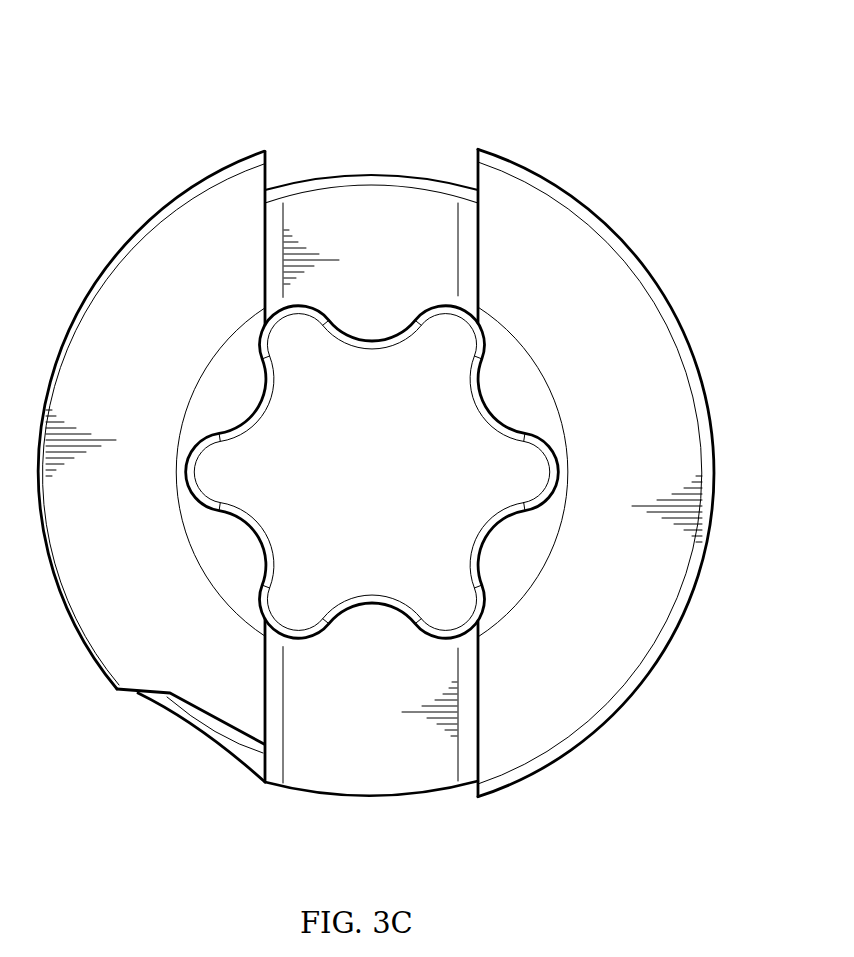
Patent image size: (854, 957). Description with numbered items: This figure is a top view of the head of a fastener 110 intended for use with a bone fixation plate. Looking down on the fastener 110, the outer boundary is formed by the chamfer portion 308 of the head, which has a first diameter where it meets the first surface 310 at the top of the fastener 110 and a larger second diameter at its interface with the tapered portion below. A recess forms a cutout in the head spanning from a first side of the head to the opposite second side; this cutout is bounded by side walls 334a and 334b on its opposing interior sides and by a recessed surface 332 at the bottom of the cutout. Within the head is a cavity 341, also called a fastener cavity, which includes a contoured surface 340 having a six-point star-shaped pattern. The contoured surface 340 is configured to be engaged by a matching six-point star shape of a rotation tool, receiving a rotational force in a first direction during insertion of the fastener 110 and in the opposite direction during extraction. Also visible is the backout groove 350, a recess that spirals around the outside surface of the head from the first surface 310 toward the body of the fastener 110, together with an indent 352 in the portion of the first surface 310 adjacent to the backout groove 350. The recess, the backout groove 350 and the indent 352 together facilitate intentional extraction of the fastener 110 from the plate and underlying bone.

The fastener 110 is at (186, 62).
The chamfer portion 308 is at (542, 180).
The first surface 310 is at (595, 273).
The recessed surface 332 is at (382, 205).
The side wall 334a is at (267, 177).
The side wall 334b is at (476, 178).
The contoured surface 340 is at (190, 484).
The cavity 341 is at (500, 478).
The backout groove 350 is at (232, 750).
The indent 352 is at (158, 695).